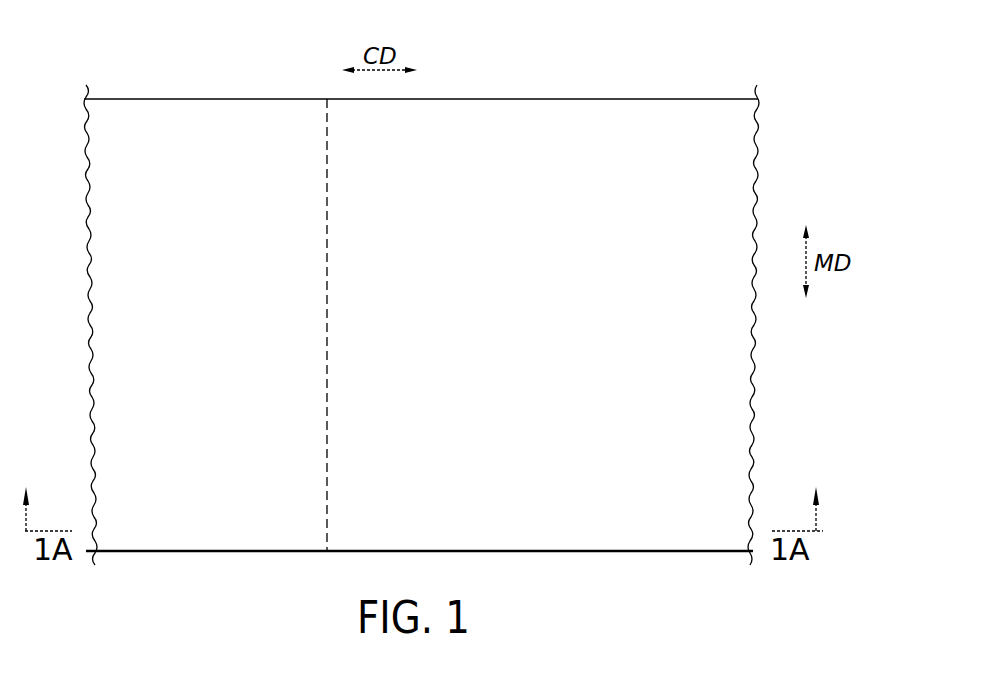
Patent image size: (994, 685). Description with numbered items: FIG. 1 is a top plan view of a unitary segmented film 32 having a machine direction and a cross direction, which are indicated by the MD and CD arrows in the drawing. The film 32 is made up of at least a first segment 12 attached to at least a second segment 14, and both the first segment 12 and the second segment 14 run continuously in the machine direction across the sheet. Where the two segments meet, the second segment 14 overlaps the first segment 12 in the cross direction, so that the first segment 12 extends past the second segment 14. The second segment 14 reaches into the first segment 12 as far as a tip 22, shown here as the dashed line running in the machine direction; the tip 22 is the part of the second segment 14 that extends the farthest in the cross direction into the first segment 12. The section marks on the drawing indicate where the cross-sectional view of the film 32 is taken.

The first segment 12 is at (147, 98).
The second segment 14 is at (631, 84).
The tip 22 is at (327, 155).
The unitary segmented film 32 is at (631, 572).